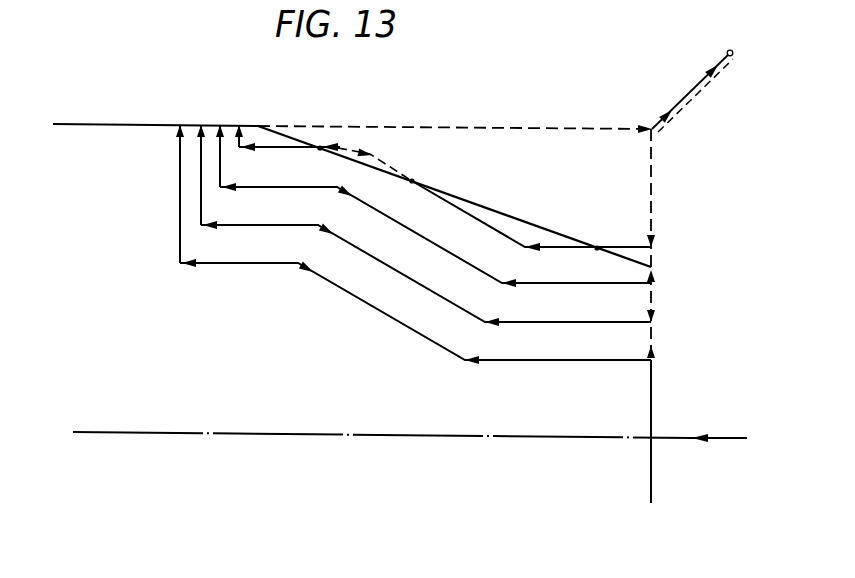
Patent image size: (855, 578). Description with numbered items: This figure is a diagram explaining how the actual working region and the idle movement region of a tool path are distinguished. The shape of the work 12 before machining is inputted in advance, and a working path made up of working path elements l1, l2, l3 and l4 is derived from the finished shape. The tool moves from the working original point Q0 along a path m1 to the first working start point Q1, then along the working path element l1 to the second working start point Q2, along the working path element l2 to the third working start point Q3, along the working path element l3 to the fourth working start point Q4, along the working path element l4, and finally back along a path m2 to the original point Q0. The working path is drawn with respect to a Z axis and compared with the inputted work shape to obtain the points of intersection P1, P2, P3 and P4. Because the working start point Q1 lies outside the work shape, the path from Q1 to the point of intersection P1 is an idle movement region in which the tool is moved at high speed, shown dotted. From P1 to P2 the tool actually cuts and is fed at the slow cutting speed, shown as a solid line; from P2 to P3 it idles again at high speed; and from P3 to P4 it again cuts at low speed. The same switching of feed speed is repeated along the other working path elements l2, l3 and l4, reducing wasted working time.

The work 12 is at (95, 131).
The point of intersection P1 is at (597, 248).
The point of intersection P2 is at (412, 181).
The point of intersection P3 is at (320, 149).
The point of intersection P4 is at (239, 129).
The working path element l1 is at (457, 206).
The working path element l2 is at (405, 227).
The working path element l3 is at (393, 268).
The working path element l4 is at (372, 307).
The working original point Q0 is at (742, 67).
The first working start point Q1 is at (653, 247).
The second working start point Q2 is at (653, 283).
The third working start point Q3 is at (653, 322).
The fourth working start point Q4 is at (653, 360).
The path m1 is at (697, 87).
The path m2 is at (681, 101).
The Z axis Z is at (410, 427).